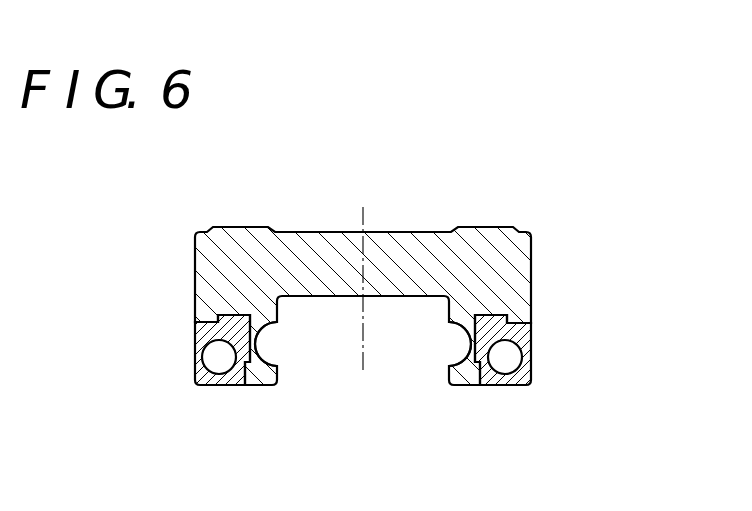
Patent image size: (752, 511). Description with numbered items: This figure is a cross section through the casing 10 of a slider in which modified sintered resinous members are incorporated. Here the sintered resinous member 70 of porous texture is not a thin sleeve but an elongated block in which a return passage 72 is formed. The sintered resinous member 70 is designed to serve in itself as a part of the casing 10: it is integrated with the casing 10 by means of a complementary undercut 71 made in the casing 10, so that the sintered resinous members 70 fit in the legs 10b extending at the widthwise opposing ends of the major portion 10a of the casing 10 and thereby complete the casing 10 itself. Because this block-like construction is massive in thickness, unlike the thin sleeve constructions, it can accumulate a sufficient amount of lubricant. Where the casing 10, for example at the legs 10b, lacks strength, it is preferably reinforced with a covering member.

The casing 10 is at (445, 230).
The major portion 10a is at (407, 245).
The legs 10b is at (262, 373).
The sintered resinous member 70 is at (366, 380).
The undercut 71 is at (218, 327).
The return passage 72 is at (219, 363).